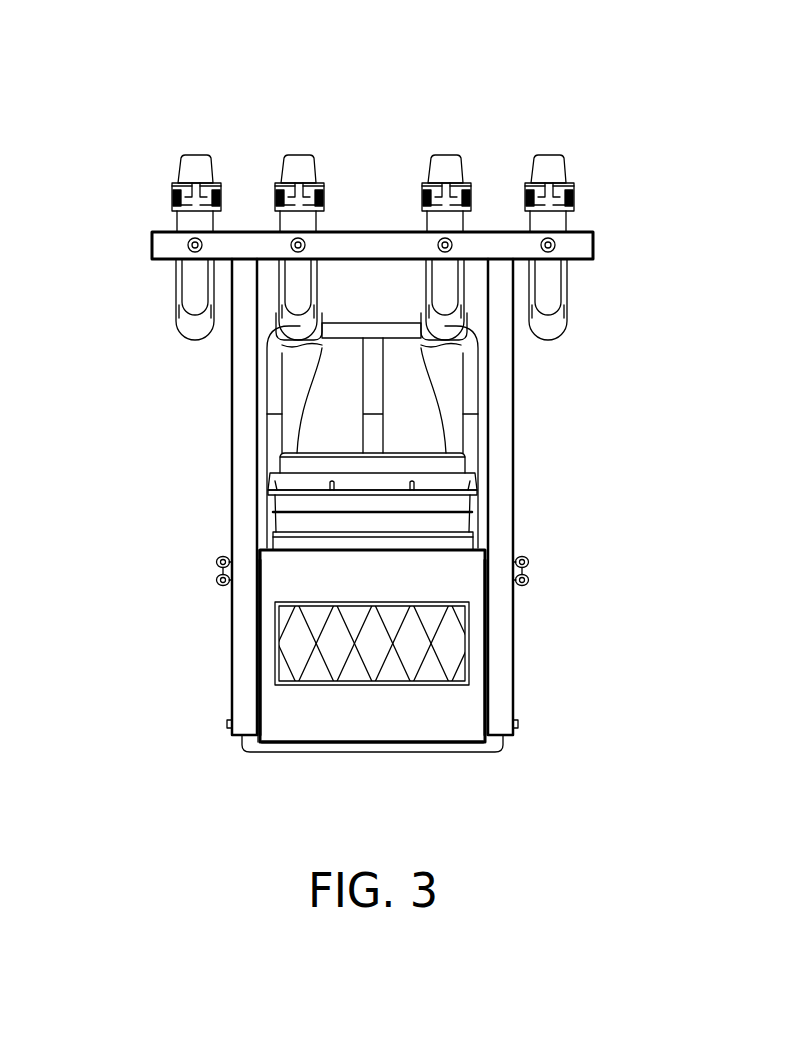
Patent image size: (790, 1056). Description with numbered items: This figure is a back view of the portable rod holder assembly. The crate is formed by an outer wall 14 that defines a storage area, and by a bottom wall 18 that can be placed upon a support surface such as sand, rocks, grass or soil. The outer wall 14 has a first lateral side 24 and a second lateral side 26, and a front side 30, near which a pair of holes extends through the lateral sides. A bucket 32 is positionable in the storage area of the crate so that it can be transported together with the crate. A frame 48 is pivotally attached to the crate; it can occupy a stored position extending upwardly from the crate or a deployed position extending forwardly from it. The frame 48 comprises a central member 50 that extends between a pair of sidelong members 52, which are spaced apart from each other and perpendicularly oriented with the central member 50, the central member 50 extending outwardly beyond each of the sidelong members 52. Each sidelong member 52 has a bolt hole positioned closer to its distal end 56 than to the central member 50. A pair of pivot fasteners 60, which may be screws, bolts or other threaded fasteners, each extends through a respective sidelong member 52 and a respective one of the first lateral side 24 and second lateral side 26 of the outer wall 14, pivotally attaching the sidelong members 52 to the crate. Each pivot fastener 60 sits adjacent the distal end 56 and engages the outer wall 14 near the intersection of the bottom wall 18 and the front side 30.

The outer wall 14 is at (433, 723).
The bottom wall 18 is at (315, 743).
The first lateral side 24 is at (258, 628).
The second lateral side 26 is at (487, 647).
The front side 30 is at (308, 579).
The bucket 32 is at (467, 522).
The frame 48 is at (366, 229).
The central member 50 is at (500, 232).
The sidelong members 52 is at (232, 405).
The distal end 56 is at (234, 738).
The pivot fasteners 60 is at (232, 678).